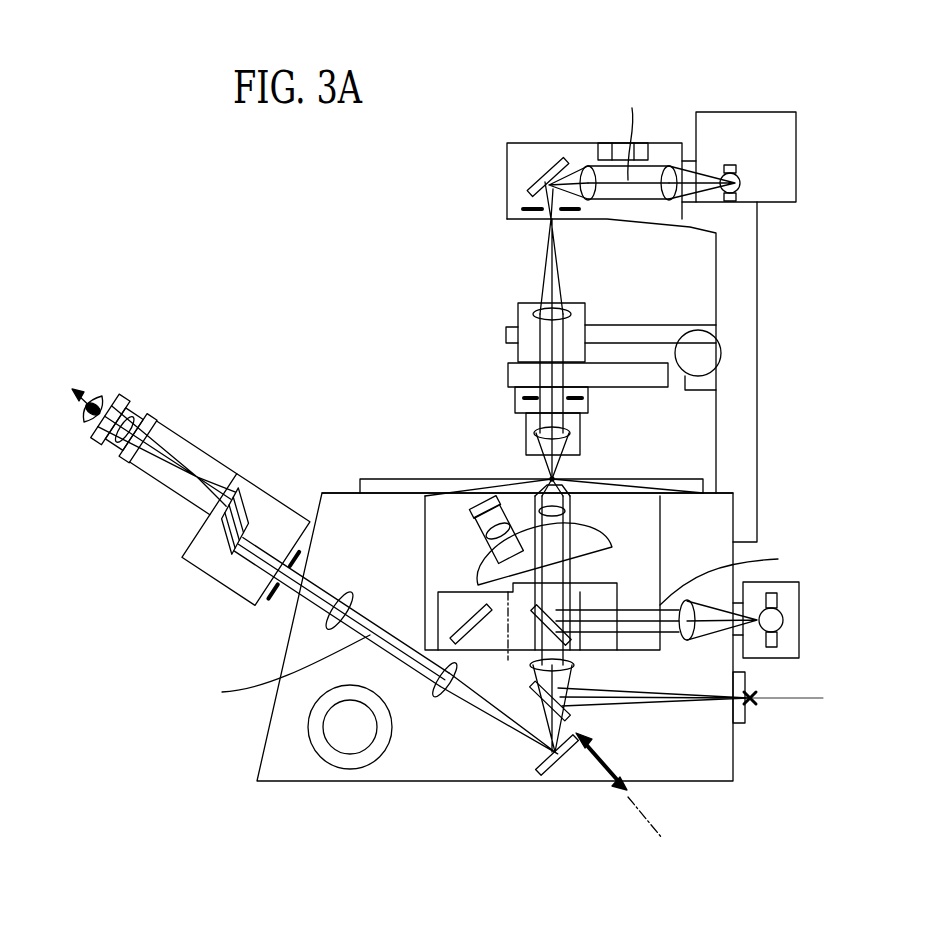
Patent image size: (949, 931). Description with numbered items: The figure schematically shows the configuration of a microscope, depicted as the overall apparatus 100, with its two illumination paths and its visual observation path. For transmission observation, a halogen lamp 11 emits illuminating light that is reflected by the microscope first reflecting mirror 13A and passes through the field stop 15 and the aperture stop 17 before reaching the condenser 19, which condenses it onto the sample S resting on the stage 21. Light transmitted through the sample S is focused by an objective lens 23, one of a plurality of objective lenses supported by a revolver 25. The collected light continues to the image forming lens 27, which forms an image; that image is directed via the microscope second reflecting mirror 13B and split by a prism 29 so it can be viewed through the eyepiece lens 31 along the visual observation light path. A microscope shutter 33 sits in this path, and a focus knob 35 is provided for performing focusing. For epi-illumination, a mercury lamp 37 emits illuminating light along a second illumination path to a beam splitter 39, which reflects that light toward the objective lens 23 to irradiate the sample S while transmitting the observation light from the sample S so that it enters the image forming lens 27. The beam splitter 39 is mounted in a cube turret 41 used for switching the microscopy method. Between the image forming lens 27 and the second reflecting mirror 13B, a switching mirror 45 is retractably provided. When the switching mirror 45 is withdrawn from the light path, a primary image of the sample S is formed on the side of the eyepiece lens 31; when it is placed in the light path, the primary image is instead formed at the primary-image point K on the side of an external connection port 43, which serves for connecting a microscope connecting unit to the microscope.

The microscope apparatus 100 is at (315, 257).
The halogen lamp 11 is at (750, 181).
The microscope first reflecting mirror 13A is at (549, 177).
The field stop 15 is at (532, 204).
The aperture stop 17 is at (522, 398).
The condenser 19 is at (508, 370).
The stage 21 is at (683, 478).
The objective lens 23 is at (537, 495).
The revolver 25 is at (527, 530).
The image forming lens 27 is at (577, 666).
The prism 29 is at (224, 522).
The eyepiece lens 31 is at (135, 458).
The microscope shutter 33 is at (272, 626).
The focus knob 35 is at (392, 727).
The mercury lamp 37 is at (787, 618).
The beam splitter 39 is at (537, 613).
The cube turret 41 is at (460, 585).
The external connection port 43 is at (745, 678).
The switching mirror 45 is at (537, 688).
The microscope second reflecting mirror 13B is at (565, 772).
The sample S is at (556, 478).
The primary-image point K is at (752, 703).